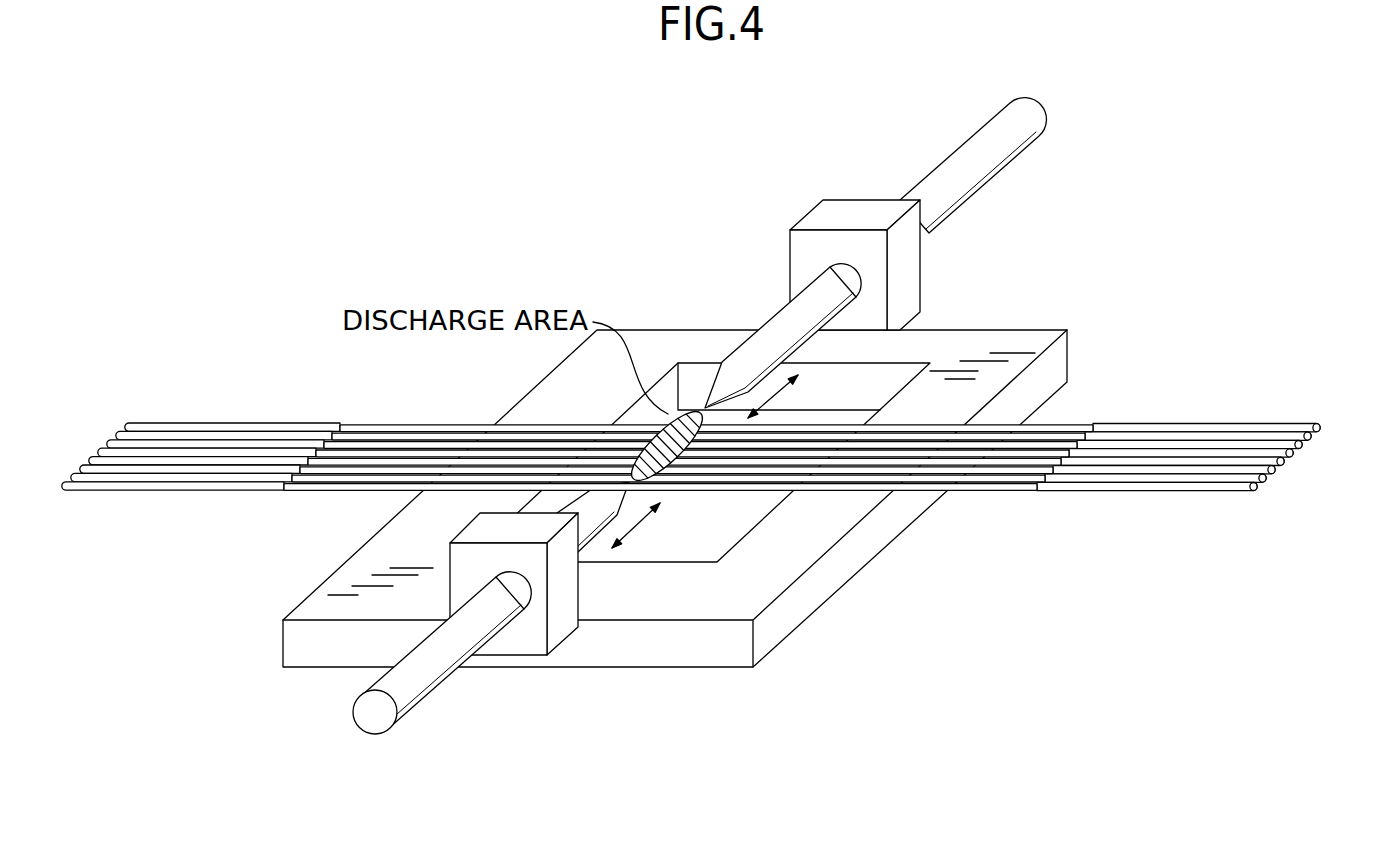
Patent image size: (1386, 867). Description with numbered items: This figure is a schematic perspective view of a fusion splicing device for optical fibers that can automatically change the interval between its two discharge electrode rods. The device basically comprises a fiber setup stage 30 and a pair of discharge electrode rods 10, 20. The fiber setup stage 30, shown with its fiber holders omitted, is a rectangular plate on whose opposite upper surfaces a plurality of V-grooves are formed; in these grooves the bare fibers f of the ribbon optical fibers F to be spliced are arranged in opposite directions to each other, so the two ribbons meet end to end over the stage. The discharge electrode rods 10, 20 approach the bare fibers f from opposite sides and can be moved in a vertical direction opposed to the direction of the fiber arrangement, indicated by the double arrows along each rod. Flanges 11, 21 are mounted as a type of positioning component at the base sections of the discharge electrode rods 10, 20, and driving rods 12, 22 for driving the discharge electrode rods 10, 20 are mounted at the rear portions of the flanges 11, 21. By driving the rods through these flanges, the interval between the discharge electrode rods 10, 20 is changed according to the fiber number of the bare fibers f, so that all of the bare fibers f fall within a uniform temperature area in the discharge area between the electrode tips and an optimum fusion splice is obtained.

The discharge electrode rod 10 is at (583, 551).
The flange 11 is at (533, 688).
The driving rod 12 is at (392, 728).
The discharge electrode rod 20 is at (788, 304).
The flange 21 is at (843, 200).
The driving rod 22 is at (924, 246).
The fiber setup stage 30 is at (825, 602).
The ribbon optical fiber F is at (1217, 362).
The bare fibers f is at (405, 428).